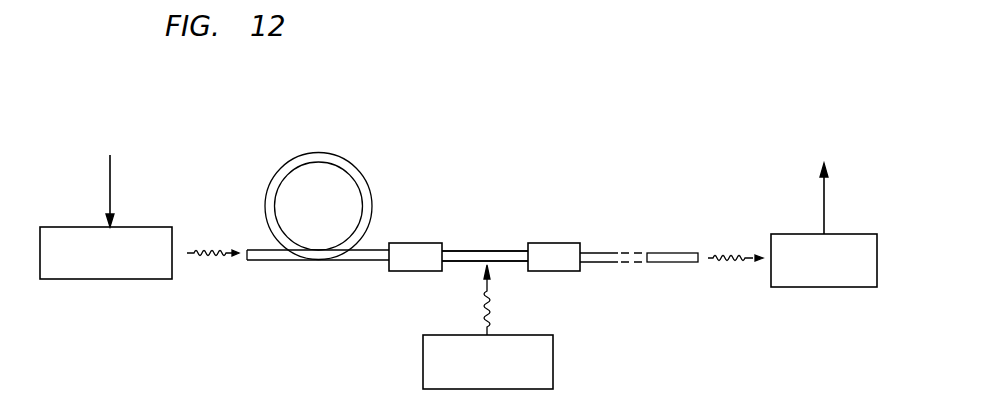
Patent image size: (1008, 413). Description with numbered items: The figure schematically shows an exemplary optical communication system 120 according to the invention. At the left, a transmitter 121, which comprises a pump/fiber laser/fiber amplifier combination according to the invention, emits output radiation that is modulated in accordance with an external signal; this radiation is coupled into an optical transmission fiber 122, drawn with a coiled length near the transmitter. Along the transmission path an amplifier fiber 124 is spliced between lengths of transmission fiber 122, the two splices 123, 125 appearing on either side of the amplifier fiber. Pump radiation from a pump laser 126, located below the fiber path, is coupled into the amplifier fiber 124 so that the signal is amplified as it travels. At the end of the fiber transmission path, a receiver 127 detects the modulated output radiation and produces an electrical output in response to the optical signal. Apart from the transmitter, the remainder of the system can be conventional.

The optical communication system 120 is at (469, 97).
The transmitter 121 is at (135, 227).
The optical transmission fiber 122 is at (343, 162).
The splice 123 is at (418, 243).
The amplifier fiber 124 is at (472, 251).
The splice 125 is at (556, 243).
The pump laser 126 is at (525, 335).
The receiver 127 is at (852, 234).